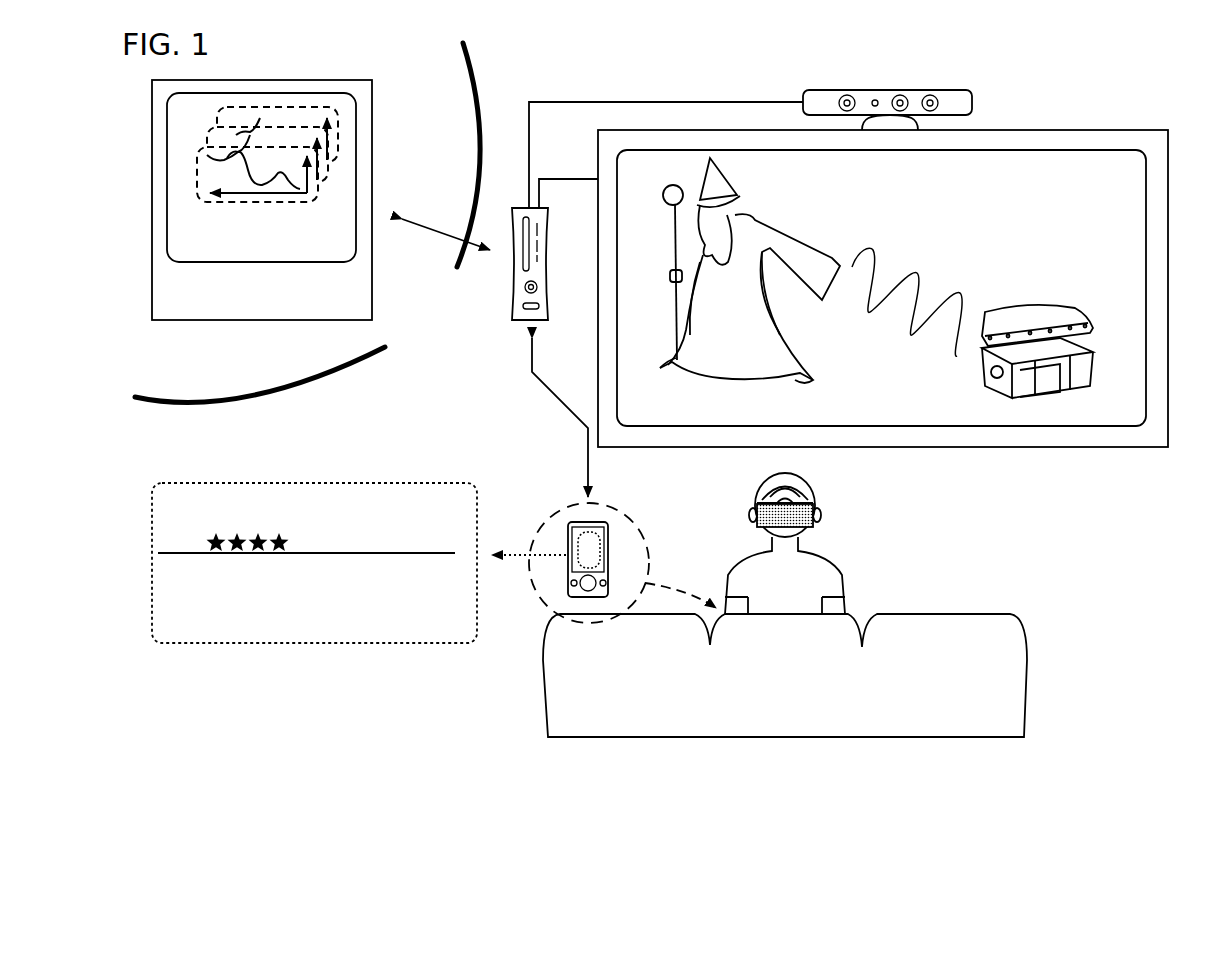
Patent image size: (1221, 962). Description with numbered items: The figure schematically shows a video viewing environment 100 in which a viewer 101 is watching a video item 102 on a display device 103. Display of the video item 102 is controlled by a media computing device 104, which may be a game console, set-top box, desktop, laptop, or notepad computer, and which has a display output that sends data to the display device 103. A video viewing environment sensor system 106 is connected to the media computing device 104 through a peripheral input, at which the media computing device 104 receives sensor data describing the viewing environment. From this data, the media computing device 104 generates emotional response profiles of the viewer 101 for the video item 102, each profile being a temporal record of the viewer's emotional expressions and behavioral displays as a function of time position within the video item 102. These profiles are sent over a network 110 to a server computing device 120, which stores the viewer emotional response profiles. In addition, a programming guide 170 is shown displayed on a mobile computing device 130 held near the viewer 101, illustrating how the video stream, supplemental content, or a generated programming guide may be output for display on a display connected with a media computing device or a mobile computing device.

The video viewing environment 100 is at (1162, 60).
The viewer 101 is at (853, 487).
The video item 102 is at (934, 406).
The display device 103 is at (1090, 130).
The media computing device 104 is at (512, 325).
The video viewing environment sensor system 106 is at (975, 96).
The network 110 is at (409, 353).
The server computing device 120 is at (330, 80).
The mobile computing device 130 is at (565, 493).
The programming guide 170 is at (338, 466).